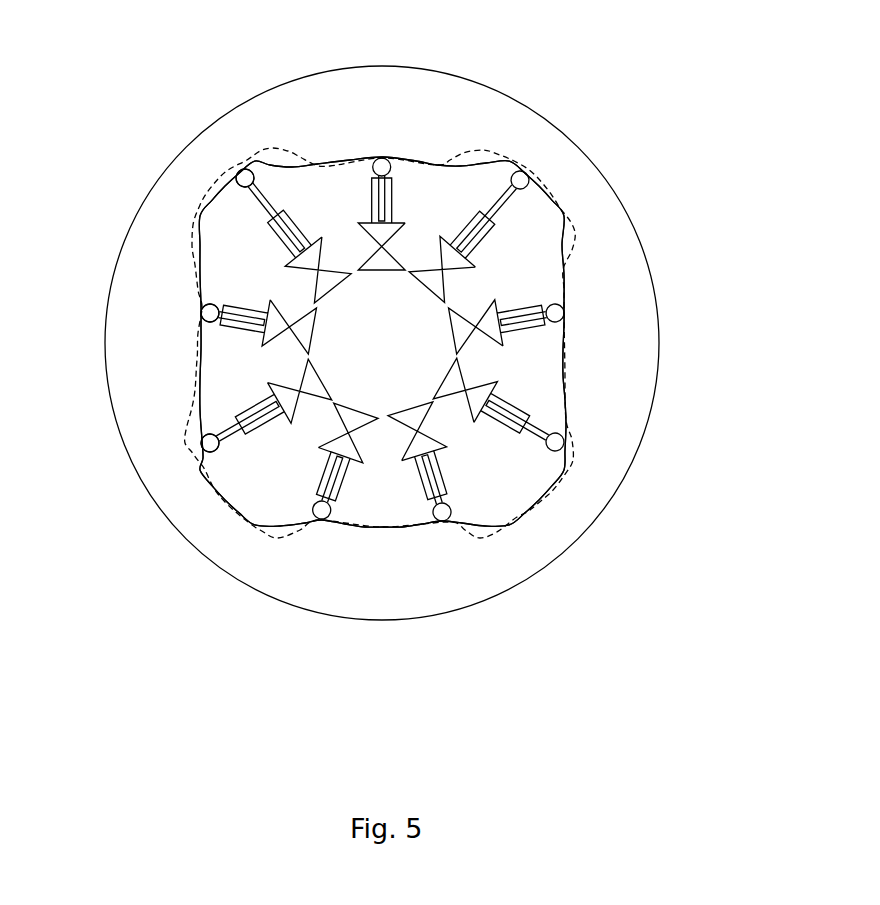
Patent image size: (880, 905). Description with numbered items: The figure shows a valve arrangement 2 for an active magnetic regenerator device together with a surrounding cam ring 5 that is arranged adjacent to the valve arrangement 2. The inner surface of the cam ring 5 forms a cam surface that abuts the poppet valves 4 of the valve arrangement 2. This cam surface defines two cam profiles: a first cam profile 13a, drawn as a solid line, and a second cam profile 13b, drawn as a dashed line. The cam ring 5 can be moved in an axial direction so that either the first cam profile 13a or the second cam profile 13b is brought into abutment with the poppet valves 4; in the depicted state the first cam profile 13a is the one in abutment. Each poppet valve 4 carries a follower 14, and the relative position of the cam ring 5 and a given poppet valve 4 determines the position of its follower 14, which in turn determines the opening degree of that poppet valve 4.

The valve arrangement 2 is at (520, 268).
The poppet valve 4 is at (498, 412).
The cam ring 5 is at (212, 148).
The first cam profile 13a is at (565, 230).
The second cam profile 13b is at (490, 148).
The follower 14 is at (205, 443).